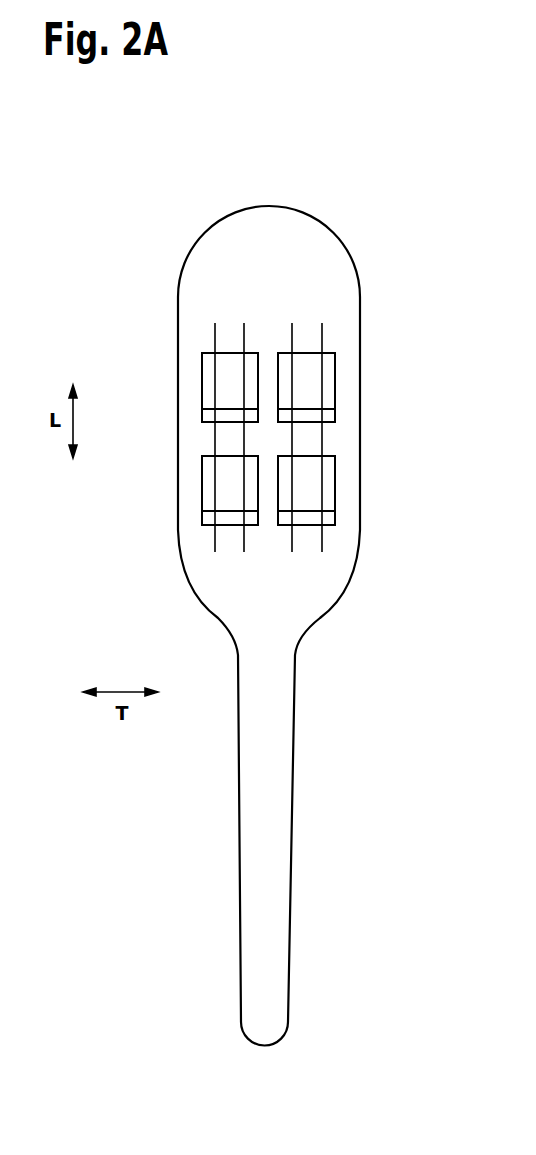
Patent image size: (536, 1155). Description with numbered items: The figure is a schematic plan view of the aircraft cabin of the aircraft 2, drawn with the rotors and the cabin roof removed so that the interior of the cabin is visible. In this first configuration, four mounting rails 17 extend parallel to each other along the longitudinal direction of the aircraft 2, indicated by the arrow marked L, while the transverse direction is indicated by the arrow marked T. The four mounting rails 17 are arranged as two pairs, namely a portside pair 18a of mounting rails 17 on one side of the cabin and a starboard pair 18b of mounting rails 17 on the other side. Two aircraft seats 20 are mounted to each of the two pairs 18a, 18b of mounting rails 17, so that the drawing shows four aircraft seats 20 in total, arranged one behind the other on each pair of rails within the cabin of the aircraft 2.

The aircraft 2 is at (153, 212).
The mounting rail 17 is at (268, 352).
The portside pair of mounting rails 18a is at (231, 323).
The starboard pair of mounting rails 18b is at (307, 323).
The aircraft seat 20 is at (230, 375).